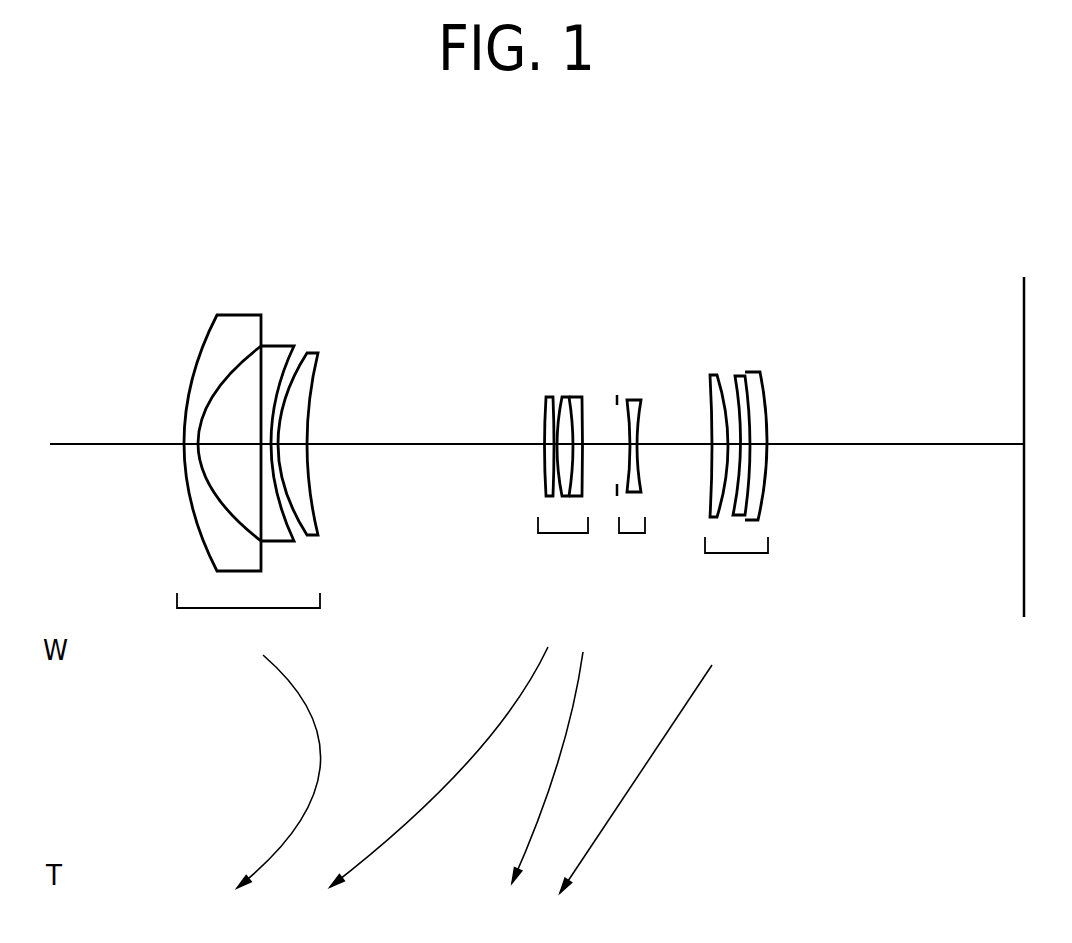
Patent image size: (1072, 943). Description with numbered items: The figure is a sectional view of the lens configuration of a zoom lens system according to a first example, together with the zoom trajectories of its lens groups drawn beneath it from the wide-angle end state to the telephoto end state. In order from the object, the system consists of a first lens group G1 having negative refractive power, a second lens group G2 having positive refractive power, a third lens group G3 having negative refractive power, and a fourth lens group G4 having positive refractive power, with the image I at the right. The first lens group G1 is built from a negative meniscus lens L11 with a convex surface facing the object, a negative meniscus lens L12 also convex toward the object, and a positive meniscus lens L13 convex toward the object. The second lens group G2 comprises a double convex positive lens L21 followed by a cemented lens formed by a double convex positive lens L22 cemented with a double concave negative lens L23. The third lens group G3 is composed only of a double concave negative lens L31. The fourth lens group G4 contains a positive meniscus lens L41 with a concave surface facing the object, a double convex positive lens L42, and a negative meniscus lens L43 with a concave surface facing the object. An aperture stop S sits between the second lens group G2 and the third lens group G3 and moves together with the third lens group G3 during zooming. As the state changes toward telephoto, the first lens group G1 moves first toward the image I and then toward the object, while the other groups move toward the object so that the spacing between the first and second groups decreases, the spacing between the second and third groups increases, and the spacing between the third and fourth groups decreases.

The negative meniscus lens L11 is at (232, 314).
The negative meniscus lens L12 is at (273, 346).
The positive meniscus lens L13 is at (311, 353).
The first lens group G1 is at (248, 619).
The double convex positive lens L21 is at (547, 396).
The double convex positive lens L22 is at (560, 396).
The double concave negative lens L23 is at (582, 396).
The second lens group G2 is at (563, 546).
The aperture stop S is at (617, 394).
The double concave negative lens L31 is at (636, 399).
The third lens group G3 is at (629, 546).
The positive meniscus lens L41 is at (715, 374).
The double convex positive lens L42 is at (740, 373).
The negative meniscus lens L43 is at (750, 372).
The fourth lens group G4 is at (736, 566).
The image I is at (1024, 305).